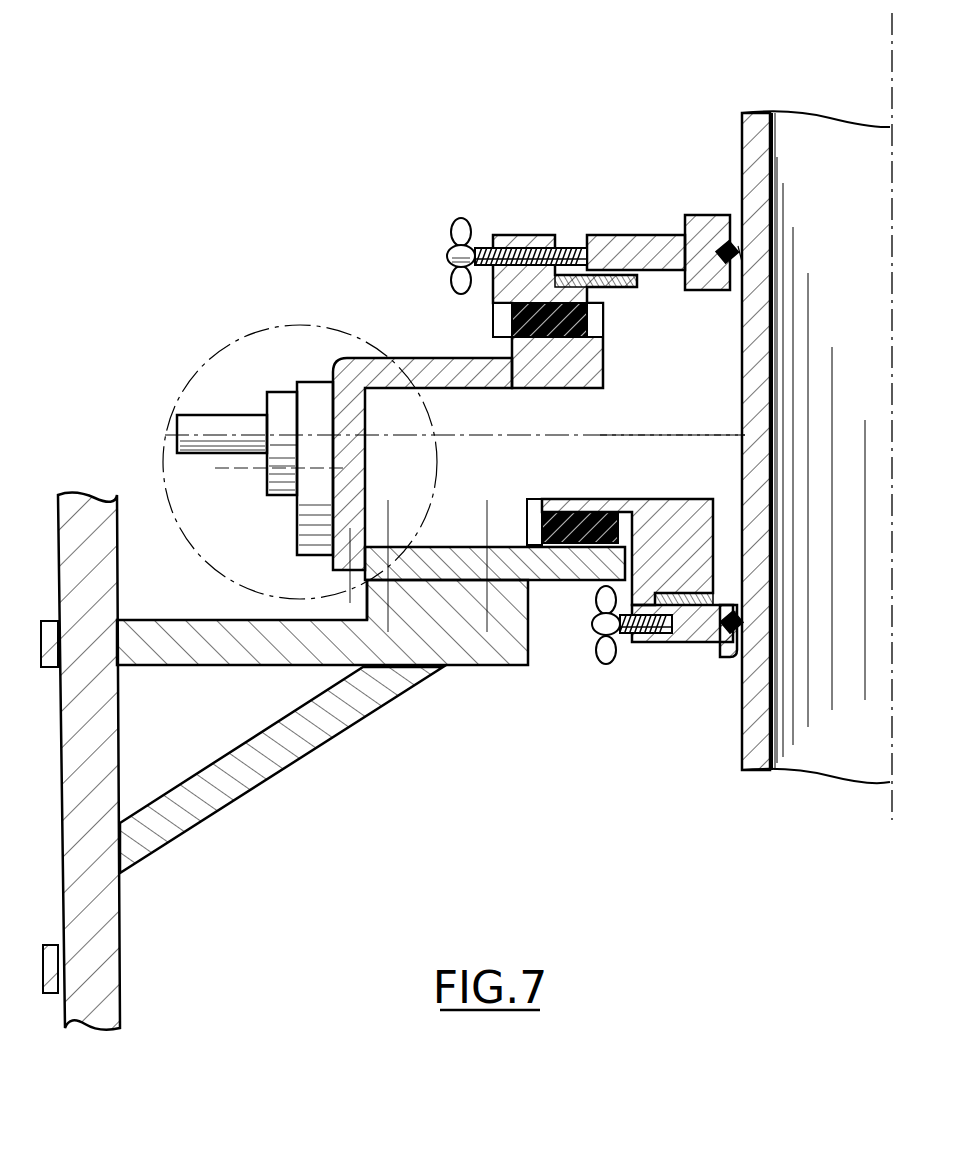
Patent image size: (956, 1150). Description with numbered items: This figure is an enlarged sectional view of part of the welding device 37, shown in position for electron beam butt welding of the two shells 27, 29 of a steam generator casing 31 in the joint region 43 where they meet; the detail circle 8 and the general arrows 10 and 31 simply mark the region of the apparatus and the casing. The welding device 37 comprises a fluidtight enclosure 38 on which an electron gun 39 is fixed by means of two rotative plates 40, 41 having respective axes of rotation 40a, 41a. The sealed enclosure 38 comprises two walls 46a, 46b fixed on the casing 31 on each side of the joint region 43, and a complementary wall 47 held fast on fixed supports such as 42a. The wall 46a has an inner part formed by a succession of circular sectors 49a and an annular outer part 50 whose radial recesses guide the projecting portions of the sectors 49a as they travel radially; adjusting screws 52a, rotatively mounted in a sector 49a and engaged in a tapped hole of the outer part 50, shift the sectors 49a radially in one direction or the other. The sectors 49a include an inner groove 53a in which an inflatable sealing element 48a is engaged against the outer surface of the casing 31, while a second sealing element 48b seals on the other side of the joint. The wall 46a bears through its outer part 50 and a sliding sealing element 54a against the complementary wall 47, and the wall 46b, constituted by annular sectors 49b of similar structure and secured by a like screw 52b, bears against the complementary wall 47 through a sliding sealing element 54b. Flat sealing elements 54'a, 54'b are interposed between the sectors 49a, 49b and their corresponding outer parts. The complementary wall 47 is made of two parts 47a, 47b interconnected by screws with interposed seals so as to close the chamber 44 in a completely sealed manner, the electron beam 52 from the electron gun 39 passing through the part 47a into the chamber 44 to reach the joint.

The detail circle (FIG. 8 area) 8 is at (315, 327).
The boat lift apparatus 10 is at (695, 95).
The shell 27 is at (755, 185).
The shell 29 is at (760, 548).
The casing 31 is at (798, 96).
The welding device 37 is at (315, 176).
The fluidtight enclosure 38 is at (541, 212).
The electron gun 39 is at (205, 421).
The rotative plate 40 is at (280, 405).
The axis of rotation 40a is at (410, 443).
The rotative plate 41 is at (322, 388).
The axis of rotation 41a is at (390, 468).
The support 42a is at (302, 645).
The joint region 43 is at (775, 420).
The chamber 44 is at (672, 377).
The wall 46a is at (659, 226).
The wall 46b is at (666, 650).
The complementary wall 47 is at (451, 587).
The part of complementary wall 47a is at (385, 360).
The part of complementary wall 47b is at (412, 563).
The inflatable sealing element 48a is at (740, 258).
The sealing element 48b is at (740, 625).
The circular sector 49a is at (705, 232).
The annular sector 49b is at (695, 627).
The outer part 50 is at (530, 245).
The electron beam 52 is at (655, 430).
The adjusting screw 52a is at (460, 252).
The lower wing nut 52b is at (632, 625).
The inner groove 53a is at (728, 263).
The sliding sealing element 54a is at (505, 322).
The sliding sealing element 54b is at (583, 545).
The flat sealing element 54'a is at (622, 307).
The flat sealing element 54'b is at (672, 686).